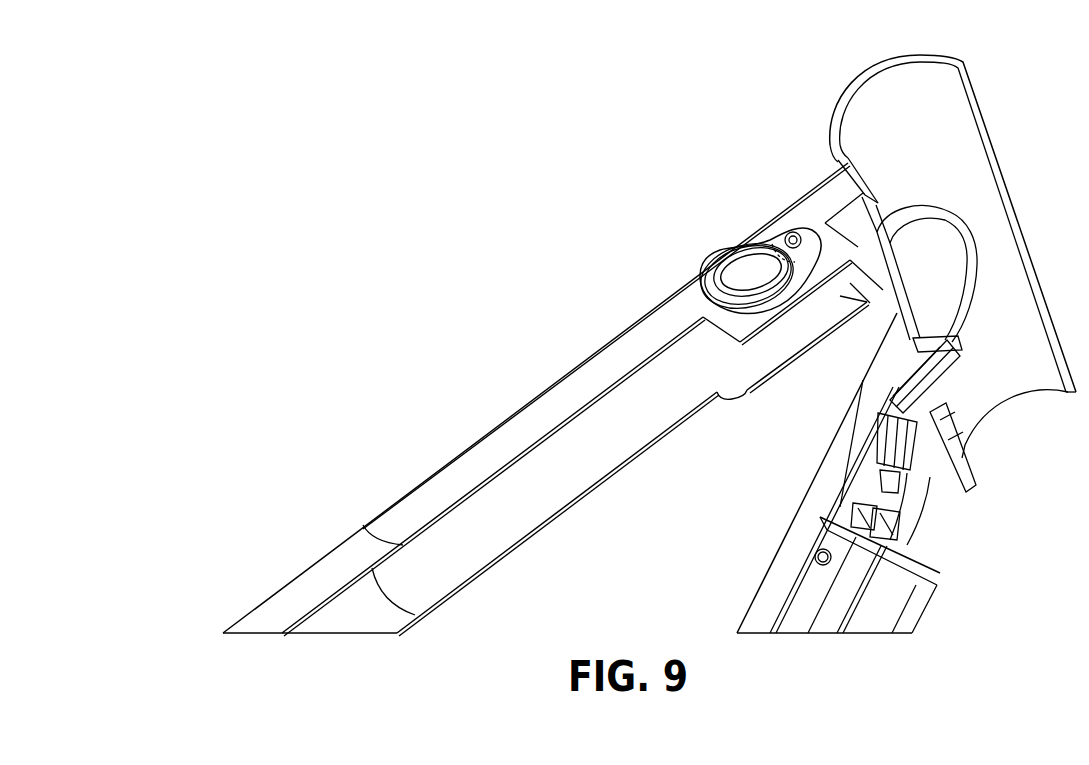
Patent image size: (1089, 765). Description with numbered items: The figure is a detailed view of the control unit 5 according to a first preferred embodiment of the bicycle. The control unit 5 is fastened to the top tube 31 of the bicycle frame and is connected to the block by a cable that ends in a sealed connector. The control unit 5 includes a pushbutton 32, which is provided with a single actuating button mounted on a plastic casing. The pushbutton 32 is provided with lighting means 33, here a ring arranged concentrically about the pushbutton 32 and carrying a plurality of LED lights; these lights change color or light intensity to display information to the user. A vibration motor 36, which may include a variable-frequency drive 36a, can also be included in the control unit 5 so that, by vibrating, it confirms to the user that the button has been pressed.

The control unit 5 is at (758, 196).
The top tube 31 is at (342, 568).
The pushbutton 32 is at (743, 265).
The lighting means 33 is at (700, 277).
The vibration motor 36 is at (781, 243).
The variable-frequency drive 36a is at (793, 240).